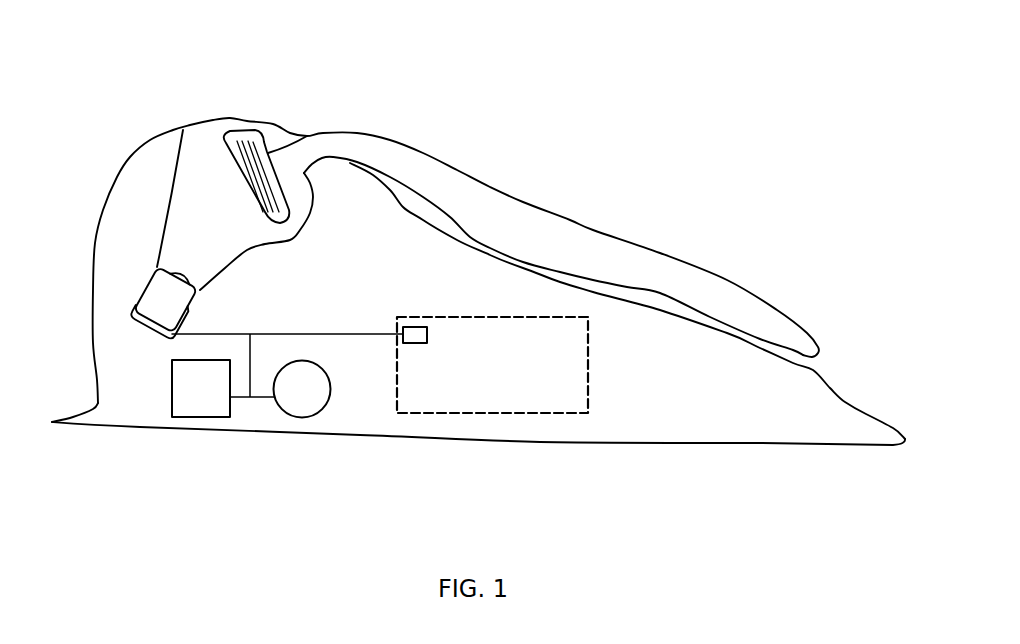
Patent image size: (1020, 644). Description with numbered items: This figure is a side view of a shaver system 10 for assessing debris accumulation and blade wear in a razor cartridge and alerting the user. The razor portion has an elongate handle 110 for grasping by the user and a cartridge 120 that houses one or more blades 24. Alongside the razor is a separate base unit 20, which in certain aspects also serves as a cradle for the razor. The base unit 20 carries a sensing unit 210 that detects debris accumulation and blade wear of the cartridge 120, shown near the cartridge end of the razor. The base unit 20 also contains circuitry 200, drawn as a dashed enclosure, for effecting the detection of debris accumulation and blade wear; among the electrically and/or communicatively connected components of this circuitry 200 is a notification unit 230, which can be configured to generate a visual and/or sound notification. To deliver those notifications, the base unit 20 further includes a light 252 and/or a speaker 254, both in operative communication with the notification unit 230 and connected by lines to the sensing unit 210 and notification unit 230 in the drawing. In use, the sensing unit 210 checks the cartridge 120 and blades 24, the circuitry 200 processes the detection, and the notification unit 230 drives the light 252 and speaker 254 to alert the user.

The shaver system 10 is at (477, 180).
The base unit 20 is at (813, 387).
The blades 24 is at (222, 157).
The elongate handle 110 is at (533, 233).
The cartridge 120 is at (263, 147).
The circuitry 200 is at (492, 365).
The sensing unit 210 is at (152, 308).
The notification unit 230 is at (413, 343).
The light 252 is at (303, 418).
The speaker 254 is at (167, 397).